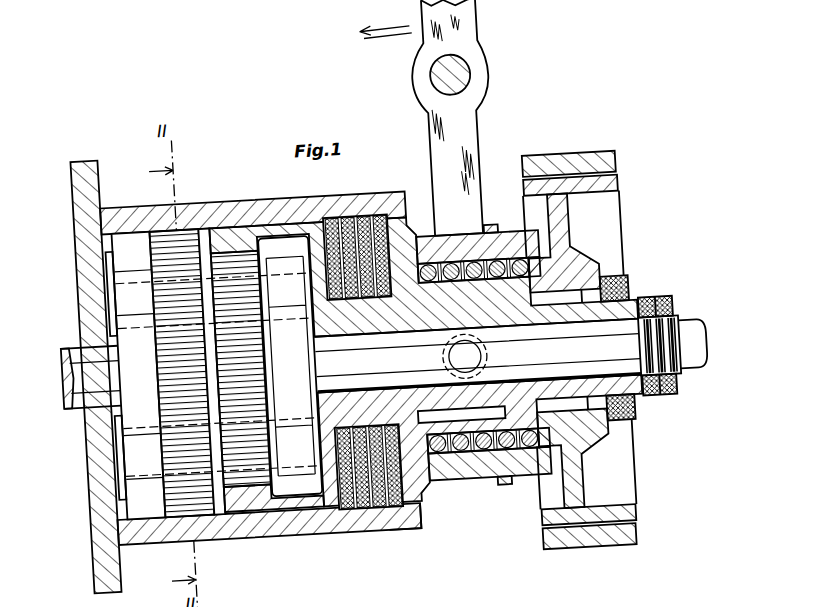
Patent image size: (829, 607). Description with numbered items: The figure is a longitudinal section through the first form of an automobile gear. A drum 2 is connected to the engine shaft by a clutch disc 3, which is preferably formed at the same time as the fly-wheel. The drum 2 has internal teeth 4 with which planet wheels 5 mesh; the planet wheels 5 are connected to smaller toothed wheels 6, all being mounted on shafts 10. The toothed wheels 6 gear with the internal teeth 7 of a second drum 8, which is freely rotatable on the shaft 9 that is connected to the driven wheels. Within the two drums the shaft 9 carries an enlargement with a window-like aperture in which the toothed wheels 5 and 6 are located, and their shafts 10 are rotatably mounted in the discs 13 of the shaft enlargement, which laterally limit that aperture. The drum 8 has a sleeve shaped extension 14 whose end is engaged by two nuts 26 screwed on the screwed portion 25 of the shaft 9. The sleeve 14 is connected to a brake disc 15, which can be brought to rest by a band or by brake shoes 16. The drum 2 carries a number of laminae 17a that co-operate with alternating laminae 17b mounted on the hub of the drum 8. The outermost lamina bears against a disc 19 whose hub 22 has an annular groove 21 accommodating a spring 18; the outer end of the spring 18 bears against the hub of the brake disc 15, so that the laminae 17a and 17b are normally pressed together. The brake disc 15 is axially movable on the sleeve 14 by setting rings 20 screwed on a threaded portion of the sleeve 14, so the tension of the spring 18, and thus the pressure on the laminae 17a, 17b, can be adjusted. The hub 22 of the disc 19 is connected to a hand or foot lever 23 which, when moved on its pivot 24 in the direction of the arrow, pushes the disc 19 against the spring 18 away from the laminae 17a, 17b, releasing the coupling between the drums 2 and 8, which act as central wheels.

The drum 2 is at (281, 518).
The clutch disc 3 is at (110, 576).
The internal teeth 4 is at (177, 499).
The planet wheels 5 is at (183, 245).
The toothed wheels 6 is at (233, 250).
The internal teeth 7 is at (250, 486).
The second drum 8 is at (298, 530).
The shaft 9 is at (95, 368).
The shafts 10 is at (128, 288).
The discs 13 is at (289, 249).
The sleeve shaped extension 14 is at (650, 313).
The brake disc 15 is at (627, 197).
The brake shoes 16 is at (561, 173).
The laminae 17a is at (362, 214).
The laminae 17b is at (358, 506).
The spring 18 is at (485, 238).
The disc 19 is at (420, 232).
The setting rings 20 is at (634, 290).
The annular groove 21 is at (450, 460).
The hub 22 is at (472, 448).
The lever 23 is at (483, 124).
The pivot 24 is at (478, 70).
The screwed portion 25 is at (682, 341).
The nuts 26 is at (668, 409).